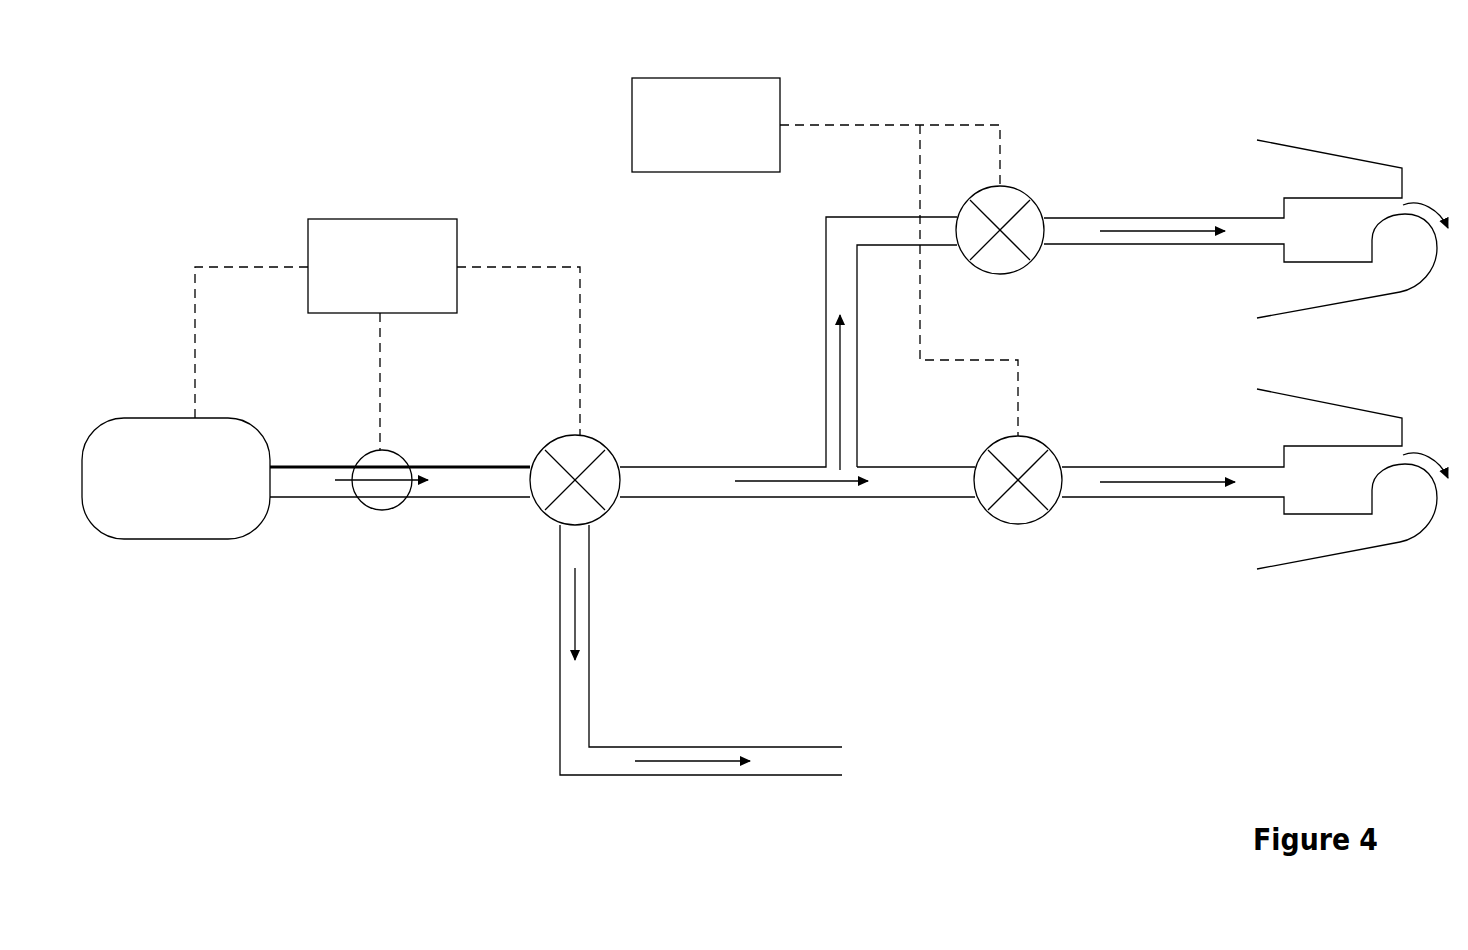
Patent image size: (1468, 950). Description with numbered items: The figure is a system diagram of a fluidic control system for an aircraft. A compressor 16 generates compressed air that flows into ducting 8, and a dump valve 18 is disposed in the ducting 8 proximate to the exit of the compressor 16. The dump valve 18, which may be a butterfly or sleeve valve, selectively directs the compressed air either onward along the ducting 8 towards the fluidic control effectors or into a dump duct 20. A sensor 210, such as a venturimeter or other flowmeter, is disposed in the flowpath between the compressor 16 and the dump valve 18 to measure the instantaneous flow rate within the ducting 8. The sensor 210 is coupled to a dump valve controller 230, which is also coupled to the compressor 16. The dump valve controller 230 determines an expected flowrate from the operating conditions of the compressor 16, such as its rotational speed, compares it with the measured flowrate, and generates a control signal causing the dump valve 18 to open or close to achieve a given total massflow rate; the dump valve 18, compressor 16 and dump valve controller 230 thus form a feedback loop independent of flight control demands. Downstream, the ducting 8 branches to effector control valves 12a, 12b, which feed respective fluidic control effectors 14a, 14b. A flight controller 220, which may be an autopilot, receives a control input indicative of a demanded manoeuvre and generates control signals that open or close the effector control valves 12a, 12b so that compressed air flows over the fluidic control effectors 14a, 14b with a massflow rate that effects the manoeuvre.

The ducting 8 is at (475, 497).
The compressor 16 is at (130, 418).
The dump valve 18 is at (615, 450).
The dump duct 20 is at (772, 746).
The effector control valve 12a is at (1030, 195).
The effector control valve 12b is at (1050, 450).
The fluidic control effector 14a is at (1365, 166).
The fluidic control effector 14b is at (1368, 416).
The sensor 210 is at (375, 510).
The flight controller 220 is at (695, 78).
The dump valve controller 230 is at (375, 222).